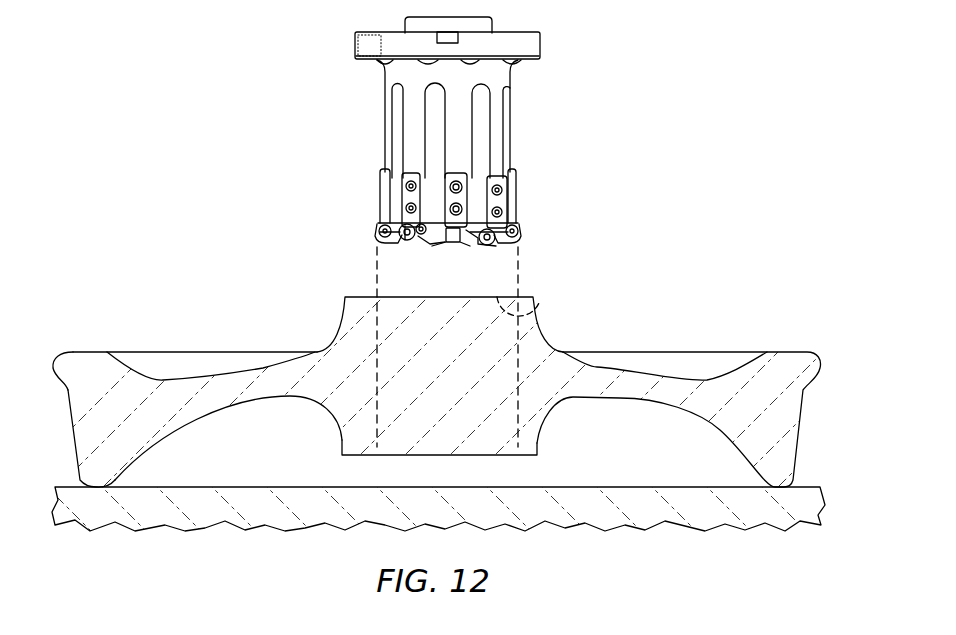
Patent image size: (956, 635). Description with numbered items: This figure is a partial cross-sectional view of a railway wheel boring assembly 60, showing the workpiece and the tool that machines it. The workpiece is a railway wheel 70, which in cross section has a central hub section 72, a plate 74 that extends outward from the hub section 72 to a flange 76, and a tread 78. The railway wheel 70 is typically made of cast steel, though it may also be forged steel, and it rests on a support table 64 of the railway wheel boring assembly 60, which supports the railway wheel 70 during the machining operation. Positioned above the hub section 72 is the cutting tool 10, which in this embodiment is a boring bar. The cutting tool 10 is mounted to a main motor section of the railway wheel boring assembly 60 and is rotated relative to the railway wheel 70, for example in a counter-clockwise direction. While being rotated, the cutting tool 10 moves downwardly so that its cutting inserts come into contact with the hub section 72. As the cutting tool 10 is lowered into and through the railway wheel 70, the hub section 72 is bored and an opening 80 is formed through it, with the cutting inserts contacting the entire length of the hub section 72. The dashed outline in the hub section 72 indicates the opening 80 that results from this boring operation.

The cutting tool 10 is at (310, 110).
The railway wheel boring assembly 60 is at (565, 139).
The support table 64 is at (805, 486).
The railway wheel 70 is at (189, 310).
The central hub section 72 is at (340, 313).
The plate 74 is at (660, 370).
The flange 76 is at (55, 360).
The tread 78 is at (75, 433).
The opening 80 is at (502, 292).